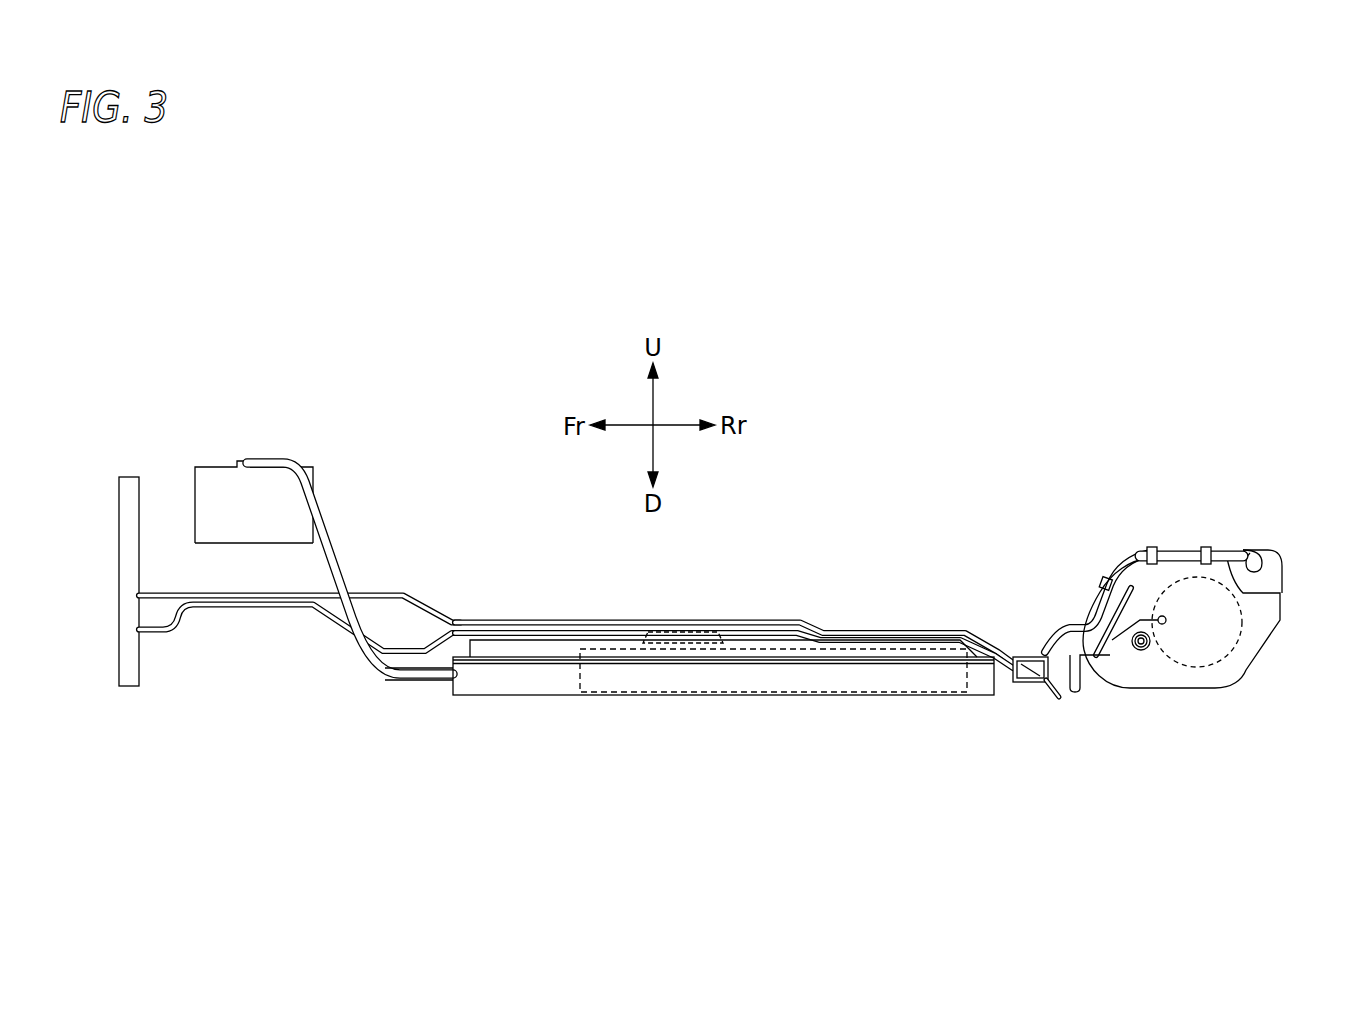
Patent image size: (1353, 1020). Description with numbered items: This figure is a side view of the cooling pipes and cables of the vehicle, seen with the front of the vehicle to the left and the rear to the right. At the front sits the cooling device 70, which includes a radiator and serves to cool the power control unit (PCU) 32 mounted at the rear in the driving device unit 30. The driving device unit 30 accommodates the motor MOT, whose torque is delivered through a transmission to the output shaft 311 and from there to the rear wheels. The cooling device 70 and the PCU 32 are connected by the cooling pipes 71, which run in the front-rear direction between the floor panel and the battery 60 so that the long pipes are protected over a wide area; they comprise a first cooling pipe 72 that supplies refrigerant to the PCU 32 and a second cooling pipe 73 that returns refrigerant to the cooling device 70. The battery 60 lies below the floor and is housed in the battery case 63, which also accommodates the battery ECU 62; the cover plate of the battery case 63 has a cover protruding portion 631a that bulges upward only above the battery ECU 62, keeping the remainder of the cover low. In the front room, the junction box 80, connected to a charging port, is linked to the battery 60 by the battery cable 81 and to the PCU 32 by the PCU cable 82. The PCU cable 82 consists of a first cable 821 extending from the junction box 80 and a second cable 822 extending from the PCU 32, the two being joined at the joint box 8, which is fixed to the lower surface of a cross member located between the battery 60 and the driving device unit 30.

The cooling device 70 is at (119, 542).
The cooling pipes 71 is at (299, 671).
The first cooling pipe 72 is at (230, 606).
The second cooling pipe 73 is at (323, 606).
The junction box 80 is at (223, 498).
The battery cable 81 is at (425, 684).
The PCU cable 82 is at (696, 583).
The first cable 821 is at (566, 620).
The second cable 822 is at (1062, 655).
The battery 60 is at (723, 678).
The battery ECU 62 is at (697, 650).
The battery case 63 is at (928, 697).
The cover protruding portion 631a is at (725, 633).
The joint box 8 is at (1031, 684).
The driving device unit 30 is at (1207, 648).
The motor MOT is at (1243, 663).
The output shaft 311 is at (1143, 651).
The power control unit (PCU) 32 is at (1272, 587).